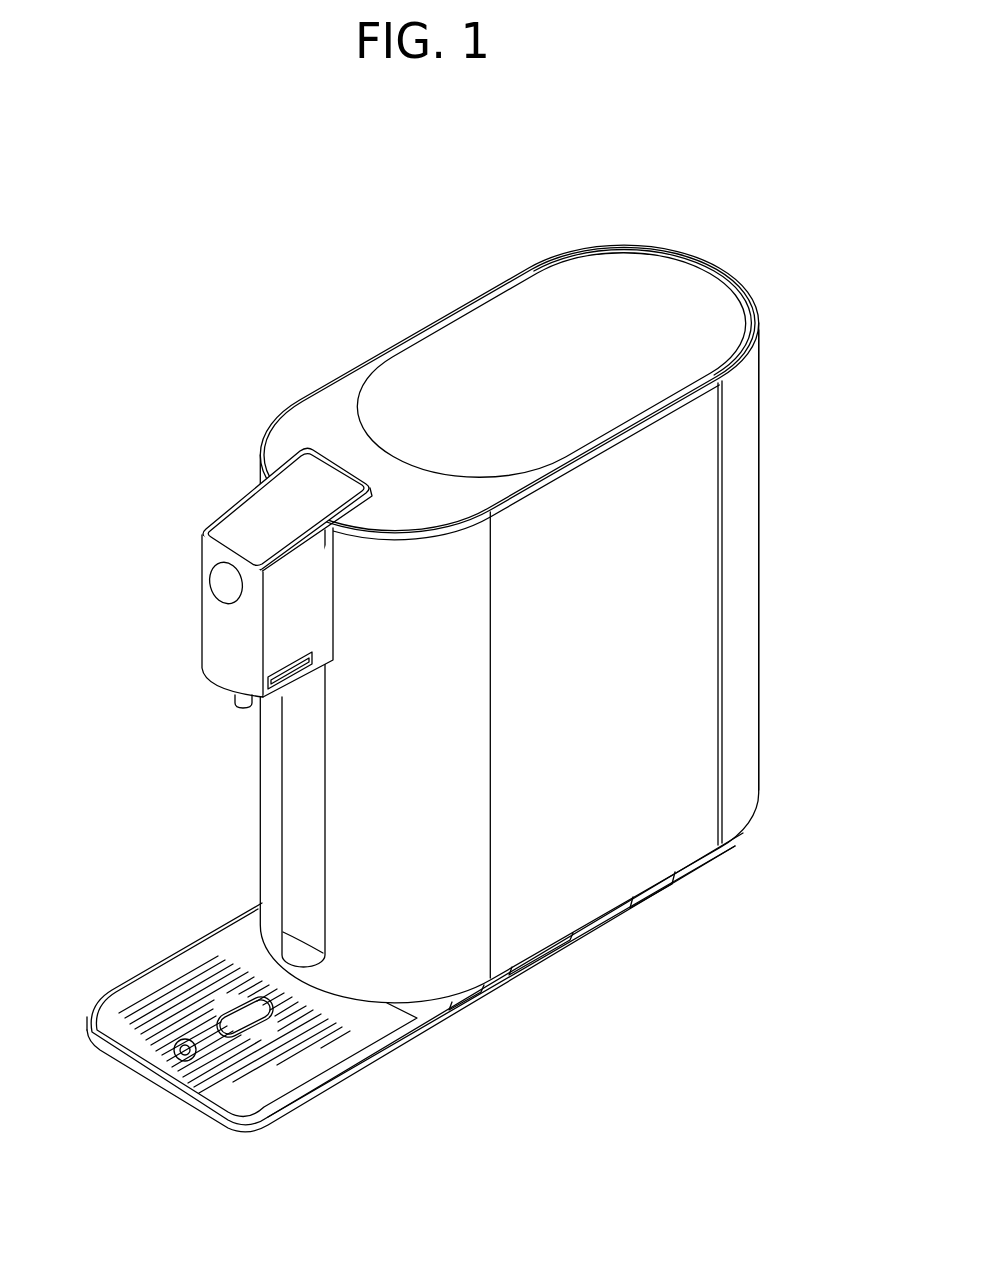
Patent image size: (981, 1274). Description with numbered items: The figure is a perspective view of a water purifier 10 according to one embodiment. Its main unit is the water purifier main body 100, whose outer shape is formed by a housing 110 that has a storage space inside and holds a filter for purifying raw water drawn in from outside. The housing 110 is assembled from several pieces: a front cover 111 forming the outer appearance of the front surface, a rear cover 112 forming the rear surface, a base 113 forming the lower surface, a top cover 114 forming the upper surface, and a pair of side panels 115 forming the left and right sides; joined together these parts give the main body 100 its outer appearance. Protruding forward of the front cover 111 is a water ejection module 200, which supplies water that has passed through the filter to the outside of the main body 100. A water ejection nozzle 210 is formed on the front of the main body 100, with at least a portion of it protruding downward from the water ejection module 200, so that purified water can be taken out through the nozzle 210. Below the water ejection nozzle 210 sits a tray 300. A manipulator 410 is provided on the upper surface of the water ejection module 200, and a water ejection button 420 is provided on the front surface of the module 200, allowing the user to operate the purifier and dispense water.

The water purifier 10 is at (347, 188).
The water purifier main body 100 is at (686, 246).
The housing 110 is at (833, 299).
The front cover 111 is at (460, 718).
The rear cover 112 is at (745, 500).
The base 113 is at (600, 928).
The top cover 114 is at (703, 320).
The side panels 115 is at (703, 430).
The water ejection module 200 is at (220, 632).
The water ejection nozzle 210 is at (237, 702).
The tray 300 is at (124, 971).
The manipulator 410 is at (248, 515).
The water ejection button 420 is at (227, 578).